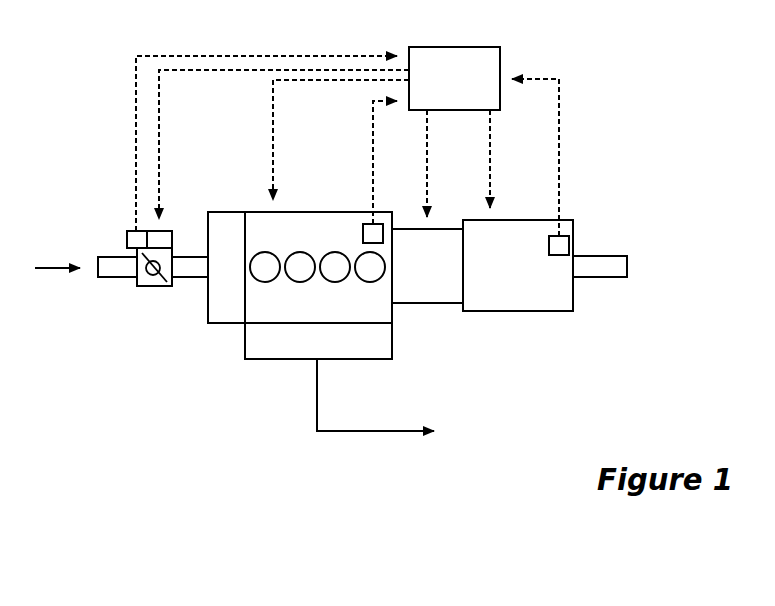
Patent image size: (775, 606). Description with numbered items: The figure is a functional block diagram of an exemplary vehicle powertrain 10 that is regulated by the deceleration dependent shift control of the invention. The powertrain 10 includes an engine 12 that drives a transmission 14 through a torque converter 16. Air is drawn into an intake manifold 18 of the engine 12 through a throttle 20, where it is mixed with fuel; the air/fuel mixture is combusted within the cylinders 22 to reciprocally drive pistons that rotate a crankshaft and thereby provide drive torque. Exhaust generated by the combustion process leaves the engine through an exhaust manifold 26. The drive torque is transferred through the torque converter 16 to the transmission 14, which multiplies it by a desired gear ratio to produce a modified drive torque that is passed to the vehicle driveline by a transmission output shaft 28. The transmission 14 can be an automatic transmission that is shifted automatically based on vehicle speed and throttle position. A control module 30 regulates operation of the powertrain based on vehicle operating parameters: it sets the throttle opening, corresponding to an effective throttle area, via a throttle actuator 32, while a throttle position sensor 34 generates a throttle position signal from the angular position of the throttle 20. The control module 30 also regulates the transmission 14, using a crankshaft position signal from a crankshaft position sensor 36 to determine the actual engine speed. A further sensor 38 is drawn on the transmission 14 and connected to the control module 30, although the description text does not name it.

The powertrain 10 is at (666, 117).
The engine 12 is at (258, 211).
The transmission 14 is at (545, 311).
The torque converter 16 is at (408, 304).
The intake manifold 18 is at (230, 323).
The throttle 20 is at (155, 286).
The cylinders 22 is at (306, 281).
The exhaust manifold 26 is at (352, 359).
The transmission output shaft 28 is at (618, 256).
The control module 30 is at (463, 47).
The throttle actuator 32 is at (168, 229).
The throttle position sensor 34 is at (135, 229).
The crankshaft position sensor 36 is at (366, 223).
The transmission output speed sensor 38 is at (563, 235).